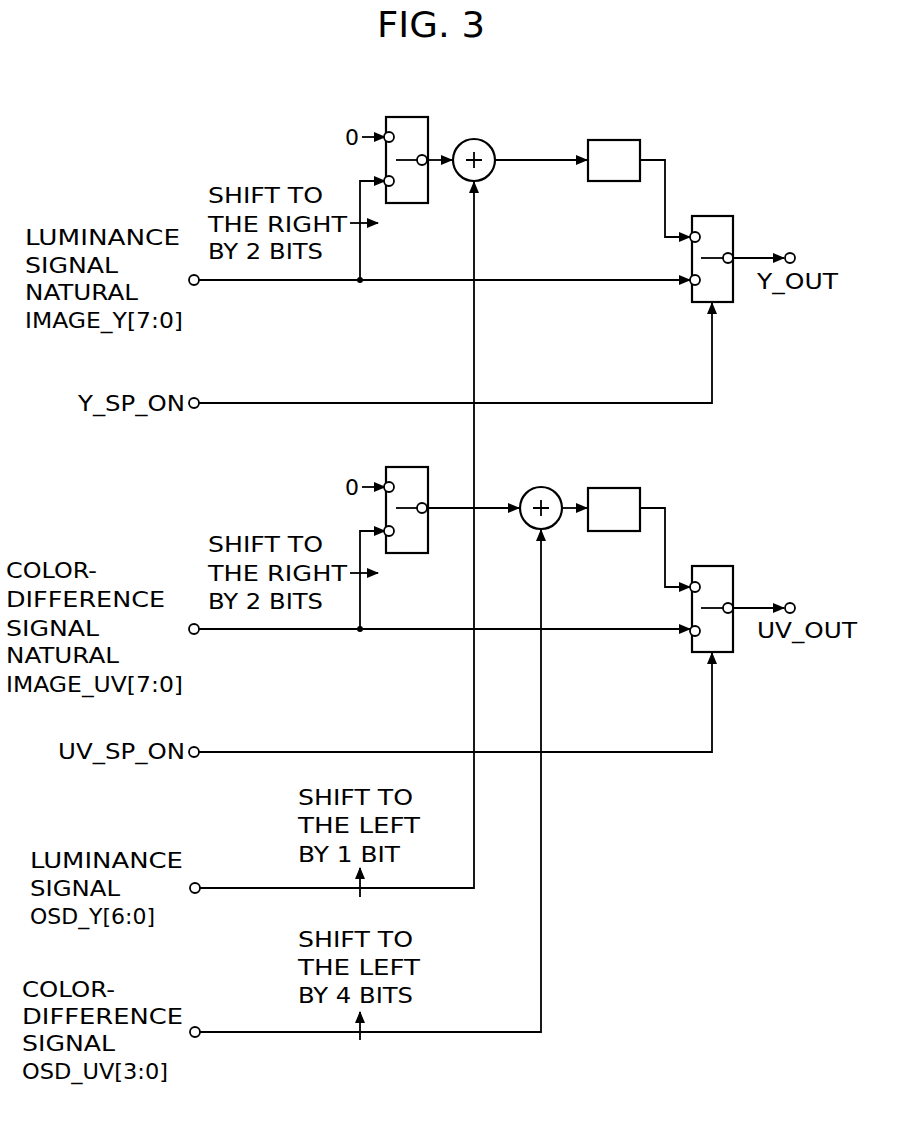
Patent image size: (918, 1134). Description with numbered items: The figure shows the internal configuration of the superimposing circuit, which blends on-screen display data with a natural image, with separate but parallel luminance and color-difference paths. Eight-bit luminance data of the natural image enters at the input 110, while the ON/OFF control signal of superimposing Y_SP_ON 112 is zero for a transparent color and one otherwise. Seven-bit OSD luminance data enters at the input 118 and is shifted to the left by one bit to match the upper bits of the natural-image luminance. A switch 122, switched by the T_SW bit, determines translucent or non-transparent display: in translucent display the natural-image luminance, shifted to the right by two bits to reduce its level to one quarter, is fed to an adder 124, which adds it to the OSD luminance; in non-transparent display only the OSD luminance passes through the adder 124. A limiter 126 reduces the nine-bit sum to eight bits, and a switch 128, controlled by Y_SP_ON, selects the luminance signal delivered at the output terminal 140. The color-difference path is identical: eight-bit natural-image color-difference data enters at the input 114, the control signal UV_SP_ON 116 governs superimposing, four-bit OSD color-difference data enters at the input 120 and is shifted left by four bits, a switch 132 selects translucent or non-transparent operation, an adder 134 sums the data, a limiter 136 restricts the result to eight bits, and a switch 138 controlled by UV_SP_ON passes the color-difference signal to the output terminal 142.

The input of luminance data of a natural image 110 is at (197, 285).
The ON/OFF control signal of superimposing (Y_SP_ON) 112 is at (197, 398).
The input of color-difference data of a natural image 114 is at (197, 634).
The ON/OFF control signal of superimposing (UV_SP_ON) 116 is at (197, 747).
The input of luminance data of OSD 118 is at (198, 883).
The color-difference data of OSD 120 is at (198, 1027).
The switch 122 is at (395, 117).
The adder 124 is at (482, 140).
The limiter 126 is at (612, 140).
The switch 128 is at (718, 216).
The switch 132 is at (405, 467).
The adder 134 is at (530, 489).
The limiter 136 is at (612, 488).
The switch 138 is at (718, 566).
The output terminal 140 is at (791, 252).
The output terminal 142 is at (791, 602).